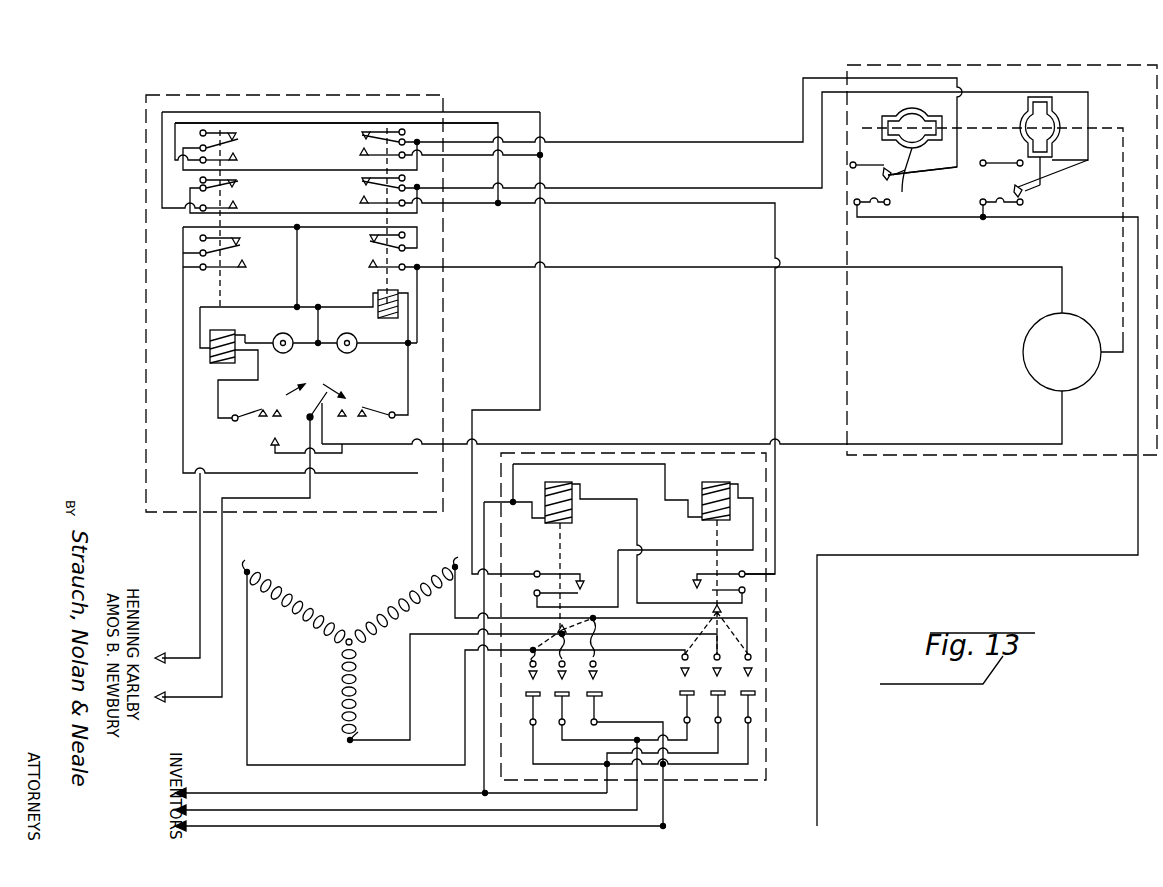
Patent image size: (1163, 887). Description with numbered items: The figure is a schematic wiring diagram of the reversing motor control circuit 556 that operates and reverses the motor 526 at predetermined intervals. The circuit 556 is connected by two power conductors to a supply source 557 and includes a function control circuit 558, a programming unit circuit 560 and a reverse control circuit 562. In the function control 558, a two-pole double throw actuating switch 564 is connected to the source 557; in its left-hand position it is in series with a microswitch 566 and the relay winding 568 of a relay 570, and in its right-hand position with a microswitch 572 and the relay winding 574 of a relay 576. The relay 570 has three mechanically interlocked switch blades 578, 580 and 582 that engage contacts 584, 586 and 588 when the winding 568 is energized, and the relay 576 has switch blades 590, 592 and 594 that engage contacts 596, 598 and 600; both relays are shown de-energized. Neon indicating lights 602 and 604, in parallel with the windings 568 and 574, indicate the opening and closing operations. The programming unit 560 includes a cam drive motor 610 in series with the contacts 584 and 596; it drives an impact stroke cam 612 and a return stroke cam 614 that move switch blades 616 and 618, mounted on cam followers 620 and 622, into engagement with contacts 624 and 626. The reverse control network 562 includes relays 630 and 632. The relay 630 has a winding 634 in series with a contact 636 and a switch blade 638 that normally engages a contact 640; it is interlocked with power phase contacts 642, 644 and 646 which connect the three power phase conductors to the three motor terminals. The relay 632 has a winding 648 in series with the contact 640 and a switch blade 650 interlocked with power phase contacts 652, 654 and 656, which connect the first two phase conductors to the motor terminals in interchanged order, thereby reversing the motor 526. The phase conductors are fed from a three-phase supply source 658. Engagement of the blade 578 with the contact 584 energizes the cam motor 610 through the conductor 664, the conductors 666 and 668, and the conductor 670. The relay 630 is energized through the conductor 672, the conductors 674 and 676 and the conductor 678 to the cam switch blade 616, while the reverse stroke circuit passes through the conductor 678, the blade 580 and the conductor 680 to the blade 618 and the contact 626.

The motor 526 is at (349, 607).
The reversing motor control circuit 556 is at (105, 221).
The supply source 557 is at (162, 673).
The function control circuit 558 is at (146, 405).
The programming unit circuit 560 is at (1120, 458).
The reverse control circuit 562 is at (765, 689).
The actuating switch 564 is at (327, 420).
The microswitch 566 is at (235, 421).
The relay winding 568 is at (233, 330).
The relay 570 is at (228, 281).
The microswitch 572 is at (376, 406).
The relay winding 574 is at (377, 290).
The relay 576 is at (368, 254).
The switch blade 578 is at (240, 241).
The switch blade 580 is at (238, 184).
The switch blade 582 is at (236, 135).
The contact 584 is at (244, 268).
The contact 586 is at (240, 206).
The contact 588 is at (240, 160).
The switch blade 590 is at (366, 237).
The switch blade 592 is at (360, 184).
The switch blade 594 is at (362, 135).
The contact 596 is at (368, 267).
The contact 598 is at (358, 203).
The contact 600 is at (359, 155).
The neon indicating light 602 is at (283, 353).
The neon indicating light 604 is at (347, 353).
The cam drive motor 610 is at (1024, 367).
The impact stroke cam 612 is at (890, 118).
The return stroke cam 614 is at (1020, 115).
The switch blade 616 is at (903, 191).
The switch blade 618 is at (1026, 190).
The cam follower 620 is at (933, 171).
The cam follower 622 is at (1066, 170).
The contact 624 is at (885, 176).
The contact 626 is at (1015, 181).
The relay 630 is at (577, 481).
The relay 632 is at (698, 481).
The winding 634 is at (574, 490).
The contact 636 is at (693, 597).
The switch blade 638 is at (570, 572).
The contact 640 is at (575, 596).
The power phase contact 642 is at (528, 702).
The power phase contact 644 is at (560, 702).
The power phase contact 646 is at (600, 696).
The winding 648 is at (727, 480).
The switch blade 650 is at (696, 578).
The power phase contact 652 is at (676, 685).
The power phase contact 654 is at (716, 690).
The power phase contact 656 is at (748, 690).
The three-phase supply source 658 is at (182, 780).
The conductor 664 is at (684, 442).
The conductor 666 is at (666, 270).
The conductor 668 is at (418, 327).
The conductor 670 is at (320, 320).
The conductor 672 is at (638, 520).
The conductor 674 is at (682, 204).
The conductor 676 is at (483, 112).
The conductor 678 is at (655, 137).
The conductor 680 is at (688, 185).